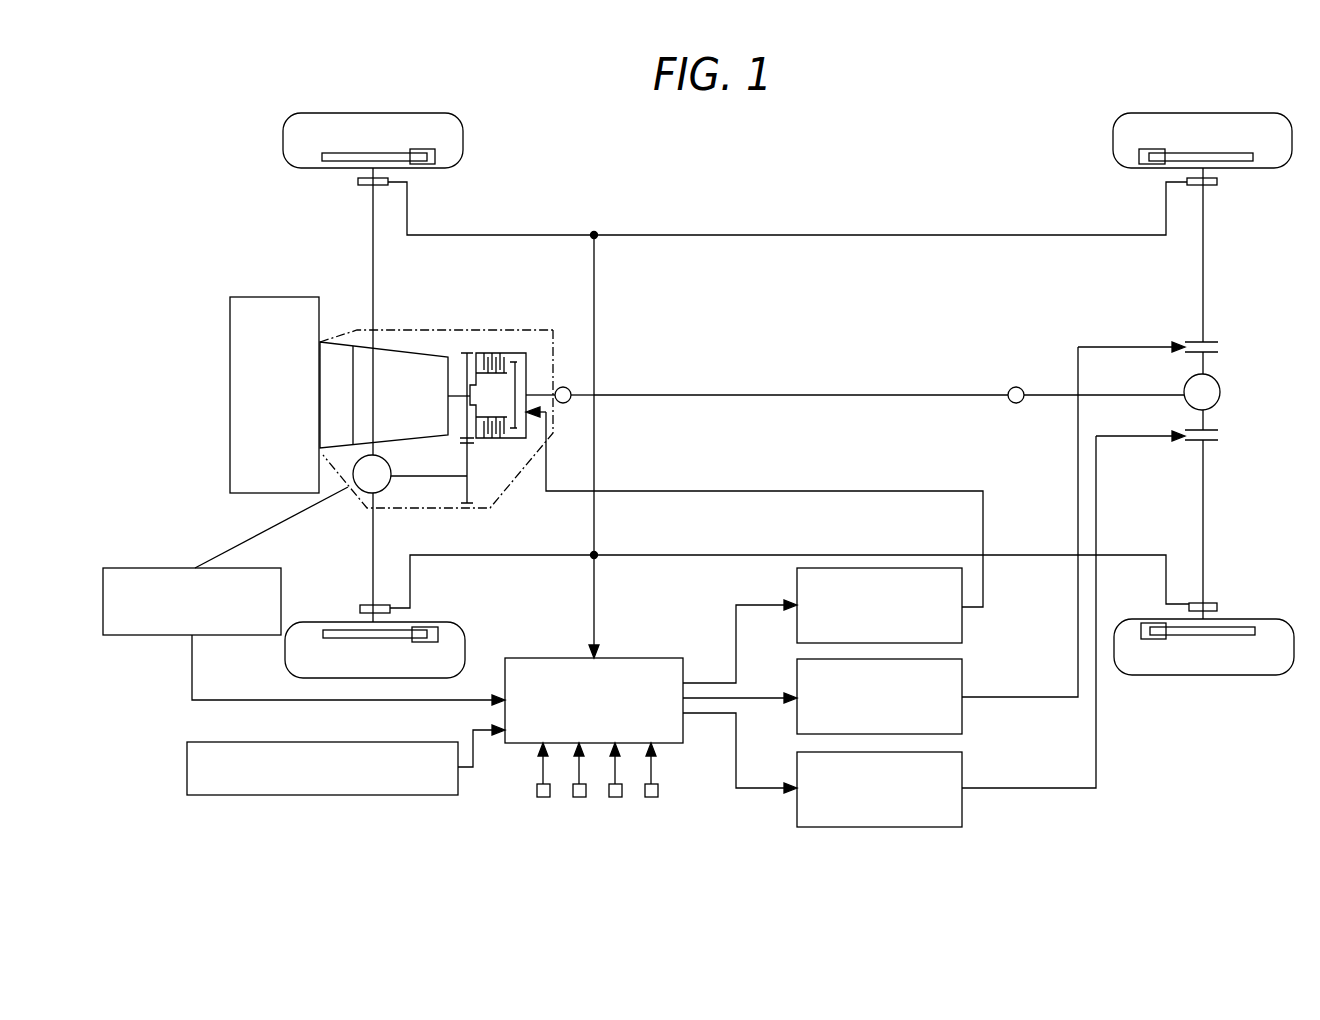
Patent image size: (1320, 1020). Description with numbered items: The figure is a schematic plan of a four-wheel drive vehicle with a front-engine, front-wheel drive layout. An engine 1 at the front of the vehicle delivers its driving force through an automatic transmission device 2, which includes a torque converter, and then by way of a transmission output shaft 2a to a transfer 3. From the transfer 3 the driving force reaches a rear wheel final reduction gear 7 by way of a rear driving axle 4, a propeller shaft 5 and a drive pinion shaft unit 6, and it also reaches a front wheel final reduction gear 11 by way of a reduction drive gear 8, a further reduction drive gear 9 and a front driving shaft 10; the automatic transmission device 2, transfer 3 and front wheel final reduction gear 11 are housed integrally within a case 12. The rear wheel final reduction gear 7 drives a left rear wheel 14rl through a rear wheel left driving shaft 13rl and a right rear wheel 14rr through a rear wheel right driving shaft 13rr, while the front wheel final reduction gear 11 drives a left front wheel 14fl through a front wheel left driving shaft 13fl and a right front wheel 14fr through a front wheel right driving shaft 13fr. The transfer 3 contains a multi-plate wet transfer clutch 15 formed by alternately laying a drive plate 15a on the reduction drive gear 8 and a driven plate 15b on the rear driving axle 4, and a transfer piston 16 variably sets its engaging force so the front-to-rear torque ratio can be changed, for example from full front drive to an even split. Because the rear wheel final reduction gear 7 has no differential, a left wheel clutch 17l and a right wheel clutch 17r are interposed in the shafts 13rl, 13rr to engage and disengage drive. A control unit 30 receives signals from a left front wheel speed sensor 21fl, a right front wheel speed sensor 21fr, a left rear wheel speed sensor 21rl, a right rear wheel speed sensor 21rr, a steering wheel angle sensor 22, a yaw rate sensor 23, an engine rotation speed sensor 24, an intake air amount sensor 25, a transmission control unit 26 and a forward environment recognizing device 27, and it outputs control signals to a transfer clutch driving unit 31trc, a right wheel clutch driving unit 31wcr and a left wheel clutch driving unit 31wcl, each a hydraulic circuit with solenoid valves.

The engine 1 is at (240, 297).
The automatic transmission device 2 is at (372, 343).
The transmission output shaft 2a is at (458, 392).
The transfer 3 is at (525, 389).
The rear driving axle 4 is at (556, 377).
The propeller shaft 5 is at (758, 395).
The drive pinion shaft unit 6 is at (1052, 395).
The rear wheel final reduction gear 7 is at (1221, 392).
The reduction drive gear 8 is at (464, 352).
The reduction drive gear 9 is at (490, 508).
The front driving shaft 10 is at (410, 477).
The front wheel final reduction gear 11 is at (380, 493).
The case 12 is at (398, 330).
The front wheel right driving shaft 13fr is at (373, 259).
The front wheel left driving shaft 13fl is at (373, 547).
The rear wheel right driving shaft 13rr is at (1204, 259).
The rear wheel left driving shaft 13rl is at (1204, 515).
The right front wheel 14fr is at (327, 113).
The left front wheel 14fl is at (432, 622).
The right rear wheel 14rr is at (1250, 113).
The left rear wheel 14rl is at (1256, 675).
The transfer clutch 15 is at (525, 352).
The drive plate 15a is at (500, 350).
The driven plate 15b is at (513, 365).
The transfer piston 16 is at (518, 362).
The right wheel clutch 17r is at (1220, 348).
The left wheel clutch 17l is at (1220, 436).
The right front wheel speed sensor 21fr is at (358, 181).
The left front wheel speed sensor 21fl is at (360, 607).
The right rear wheel speed sensor 21rr is at (1217, 183).
The left rear wheel speed sensor 21rl is at (1217, 606).
The steering wheel angle sensor 22 is at (543, 797).
The yaw rate sensor 23 is at (579, 797).
The engine rotation speed sensor 24 is at (615, 797).
The intake air amount sensor 25 is at (651, 797).
The transmission control unit 26 is at (125, 568).
The forward environment recognizing device 27 is at (268, 742).
The control unit 30 is at (640, 658).
The transfer clutch driving unit 31trc is at (962, 628).
The right wheel clutch driving unit 31wcr is at (962, 721).
The left wheel clutch driving unit 31wcl is at (962, 813).